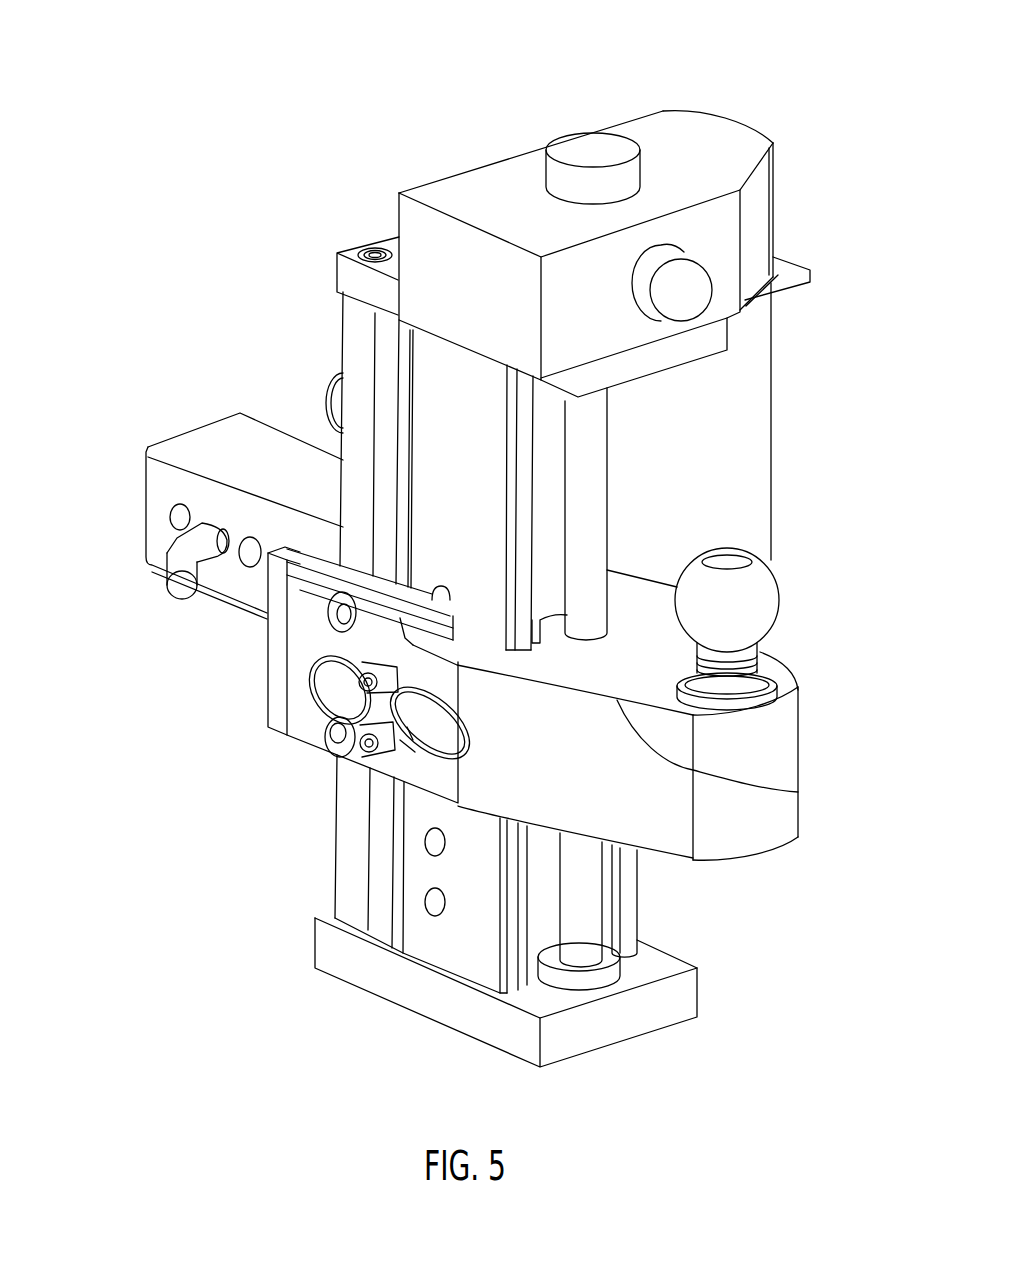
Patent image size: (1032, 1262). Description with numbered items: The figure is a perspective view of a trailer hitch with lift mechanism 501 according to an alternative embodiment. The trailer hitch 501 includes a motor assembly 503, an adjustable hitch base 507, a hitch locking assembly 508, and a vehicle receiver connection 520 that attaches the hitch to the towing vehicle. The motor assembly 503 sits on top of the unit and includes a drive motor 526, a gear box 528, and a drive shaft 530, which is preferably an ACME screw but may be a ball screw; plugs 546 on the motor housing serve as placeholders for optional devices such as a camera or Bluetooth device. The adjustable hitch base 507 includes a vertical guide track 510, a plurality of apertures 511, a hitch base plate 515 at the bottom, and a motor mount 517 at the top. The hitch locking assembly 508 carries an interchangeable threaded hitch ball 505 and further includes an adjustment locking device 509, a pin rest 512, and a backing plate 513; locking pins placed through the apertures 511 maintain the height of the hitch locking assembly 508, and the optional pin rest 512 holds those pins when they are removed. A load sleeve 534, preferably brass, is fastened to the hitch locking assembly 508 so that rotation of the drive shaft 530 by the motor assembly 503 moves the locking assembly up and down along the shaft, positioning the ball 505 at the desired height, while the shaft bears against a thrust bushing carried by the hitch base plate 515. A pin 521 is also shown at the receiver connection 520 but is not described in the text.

The trailer hitch with lift mechanism 501 is at (850, 101).
The motor assembly 503 is at (460, 155).
The plugs 546 is at (575, 133).
The drive motor 526 is at (773, 200).
The motor mount 517 is at (337, 273).
The gear box 528 is at (395, 238).
The guide track 510 is at (388, 830).
The apertures 511 is at (433, 845).
The vehicle receiver connection 520 is at (203, 433).
The pin 521 is at (165, 535).
The backing plate 513 is at (267, 693).
The pin rest 512 is at (370, 633).
The adjustment locking device 509 is at (345, 683).
The drive shaft 530 is at (608, 485).
The hitch locking assembly 508 is at (622, 705).
The adjustable hitch base 507 is at (507, 850).
The threaded hitch ball 505 is at (778, 603).
The load sleeve 534 is at (620, 967).
The hitch base plate 515 is at (565, 1062).